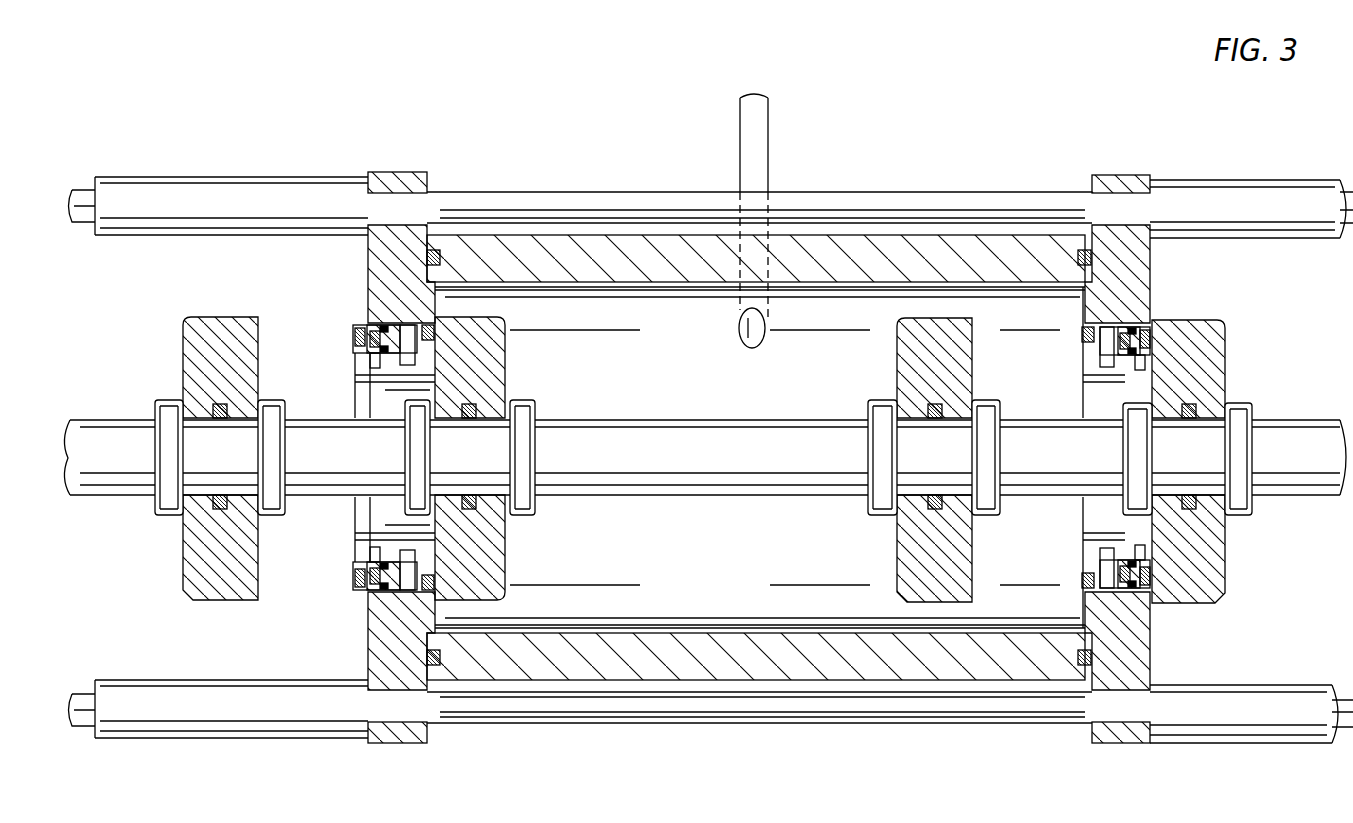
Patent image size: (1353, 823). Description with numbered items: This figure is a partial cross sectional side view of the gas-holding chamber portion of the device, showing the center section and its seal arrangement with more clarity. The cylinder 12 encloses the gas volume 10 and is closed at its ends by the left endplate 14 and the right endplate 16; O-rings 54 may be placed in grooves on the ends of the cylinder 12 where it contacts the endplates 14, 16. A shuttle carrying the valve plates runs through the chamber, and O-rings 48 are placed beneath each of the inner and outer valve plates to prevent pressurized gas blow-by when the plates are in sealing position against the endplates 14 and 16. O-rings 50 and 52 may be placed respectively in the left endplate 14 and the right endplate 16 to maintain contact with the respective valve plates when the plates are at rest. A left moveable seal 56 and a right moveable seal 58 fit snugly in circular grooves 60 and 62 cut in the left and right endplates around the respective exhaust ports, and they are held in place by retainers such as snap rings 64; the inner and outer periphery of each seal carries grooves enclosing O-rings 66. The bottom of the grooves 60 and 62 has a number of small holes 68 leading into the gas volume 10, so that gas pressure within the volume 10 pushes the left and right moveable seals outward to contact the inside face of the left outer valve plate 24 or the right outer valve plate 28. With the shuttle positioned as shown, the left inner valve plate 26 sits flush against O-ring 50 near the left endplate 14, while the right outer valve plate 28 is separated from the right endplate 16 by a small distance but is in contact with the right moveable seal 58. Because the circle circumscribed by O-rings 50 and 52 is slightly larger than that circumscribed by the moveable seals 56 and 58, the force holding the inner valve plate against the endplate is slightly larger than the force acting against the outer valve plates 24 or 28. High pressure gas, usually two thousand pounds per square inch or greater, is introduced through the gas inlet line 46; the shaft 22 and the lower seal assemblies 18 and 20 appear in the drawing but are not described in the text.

The gas volume 10 is at (686, 393).
The cylinder 12 is at (663, 670).
The left endplate 14 is at (397, 232).
The right endplate 16 is at (1120, 240).
The lower left seal assembly 18 is at (787, 589).
The lower right seal assembly 20 is at (1095, 545).
The shaft 22 is at (1325, 428).
The left outer valve plate 24 is at (220, 325).
The left inner valve plate 26 is at (490, 330).
The right outer valve plate 28 is at (1218, 345).
The gas inlet line 46 is at (770, 128).
The O-rings 48 is at (210, 405).
The O-ring 50 is at (440, 325).
The O-ring 52 is at (1080, 325).
The O-rings 54 is at (440, 660).
The left moveable seal 56 is at (360, 339).
The right moveable seal 58 is at (1123, 336).
The circular groove 60 is at (385, 363).
The circular groove 62 is at (1100, 368).
The snap rings 64 is at (360, 556).
The O-rings 66 is at (385, 570).
The small holes 68 is at (497, 353).